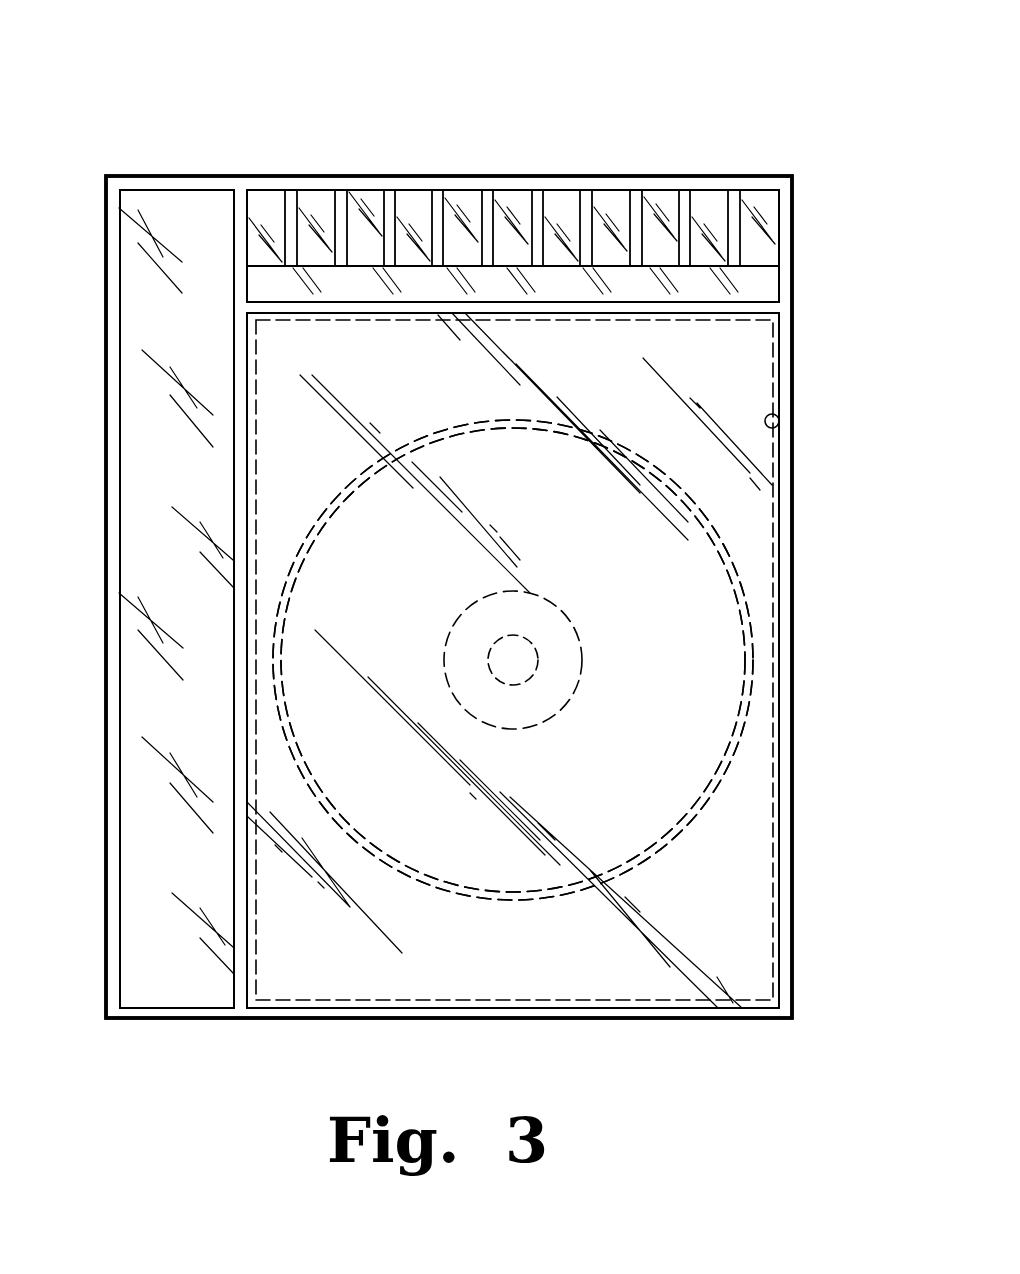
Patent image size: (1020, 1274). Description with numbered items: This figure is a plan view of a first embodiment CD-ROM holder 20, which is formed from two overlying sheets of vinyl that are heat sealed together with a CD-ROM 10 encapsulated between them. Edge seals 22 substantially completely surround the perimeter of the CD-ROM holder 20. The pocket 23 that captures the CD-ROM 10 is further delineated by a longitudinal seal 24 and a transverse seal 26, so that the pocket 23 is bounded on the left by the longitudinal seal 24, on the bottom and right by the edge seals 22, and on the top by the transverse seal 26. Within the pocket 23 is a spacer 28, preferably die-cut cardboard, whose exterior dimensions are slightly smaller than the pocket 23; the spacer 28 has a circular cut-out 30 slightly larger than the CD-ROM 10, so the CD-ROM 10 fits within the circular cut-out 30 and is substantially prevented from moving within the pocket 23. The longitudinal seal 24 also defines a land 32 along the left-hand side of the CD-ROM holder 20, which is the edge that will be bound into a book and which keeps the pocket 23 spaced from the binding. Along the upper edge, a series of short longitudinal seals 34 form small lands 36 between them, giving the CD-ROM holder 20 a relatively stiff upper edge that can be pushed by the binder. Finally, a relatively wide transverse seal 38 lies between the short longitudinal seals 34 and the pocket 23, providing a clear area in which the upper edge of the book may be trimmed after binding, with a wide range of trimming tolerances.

The CD-ROM 10 is at (718, 651).
The CD-ROM holder 20 is at (800, 96).
The edge seals 22 is at (190, 186).
The pocket 23 is at (780, 421).
The longitudinal seal 24 is at (240, 478).
The transverse seal 26 is at (740, 324).
The spacer 28 is at (748, 390).
The circular cut-out 30 is at (718, 532).
The land 32 is at (155, 876).
The short longitudinal seals 34 is at (291, 200).
The small lands 36 is at (268, 204).
The wide transverse seal 38 is at (765, 284).